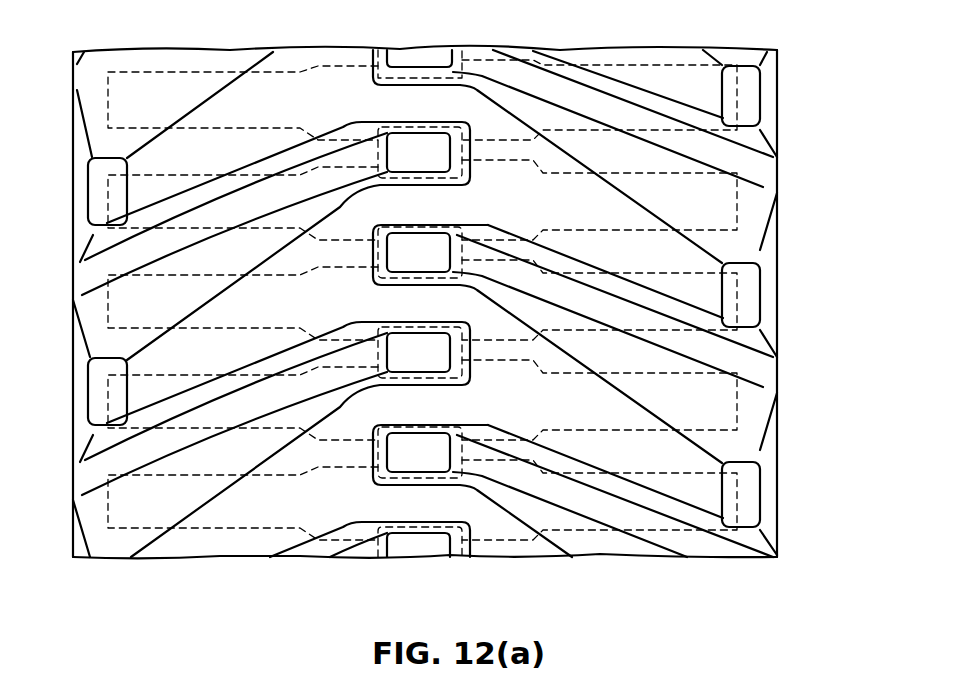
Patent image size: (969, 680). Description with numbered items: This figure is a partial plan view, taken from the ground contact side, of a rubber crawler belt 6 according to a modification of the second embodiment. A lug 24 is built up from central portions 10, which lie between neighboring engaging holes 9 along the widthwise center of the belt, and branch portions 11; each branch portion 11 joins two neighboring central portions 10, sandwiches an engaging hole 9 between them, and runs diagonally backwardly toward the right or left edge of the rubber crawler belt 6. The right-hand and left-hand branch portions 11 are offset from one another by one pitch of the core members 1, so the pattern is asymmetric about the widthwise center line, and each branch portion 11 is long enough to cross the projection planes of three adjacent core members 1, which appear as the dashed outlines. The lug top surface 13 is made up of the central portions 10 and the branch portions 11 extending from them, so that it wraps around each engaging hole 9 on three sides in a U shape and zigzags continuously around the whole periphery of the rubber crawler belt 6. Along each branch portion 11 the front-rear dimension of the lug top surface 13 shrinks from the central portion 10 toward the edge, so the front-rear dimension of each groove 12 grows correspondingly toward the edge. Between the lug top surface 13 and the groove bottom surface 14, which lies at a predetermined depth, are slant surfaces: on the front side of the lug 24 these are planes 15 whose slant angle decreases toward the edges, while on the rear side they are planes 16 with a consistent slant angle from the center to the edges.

The core member 1 is at (120, 113).
The rubber crawler belt 6 is at (801, 121).
The engaging hole 9 is at (415, 150).
The central portion 10 is at (378, 203).
The branch portion 11 is at (695, 253).
The groove 12 is at (630, 344).
The lug top surface 13 is at (503, 556).
The groove bottom surface 14 is at (747, 363).
The slant surface (front side plane) 15 is at (833, 305).
The slant surface (rear side plane) 16 is at (720, 320).
The lug 24 is at (190, 563).